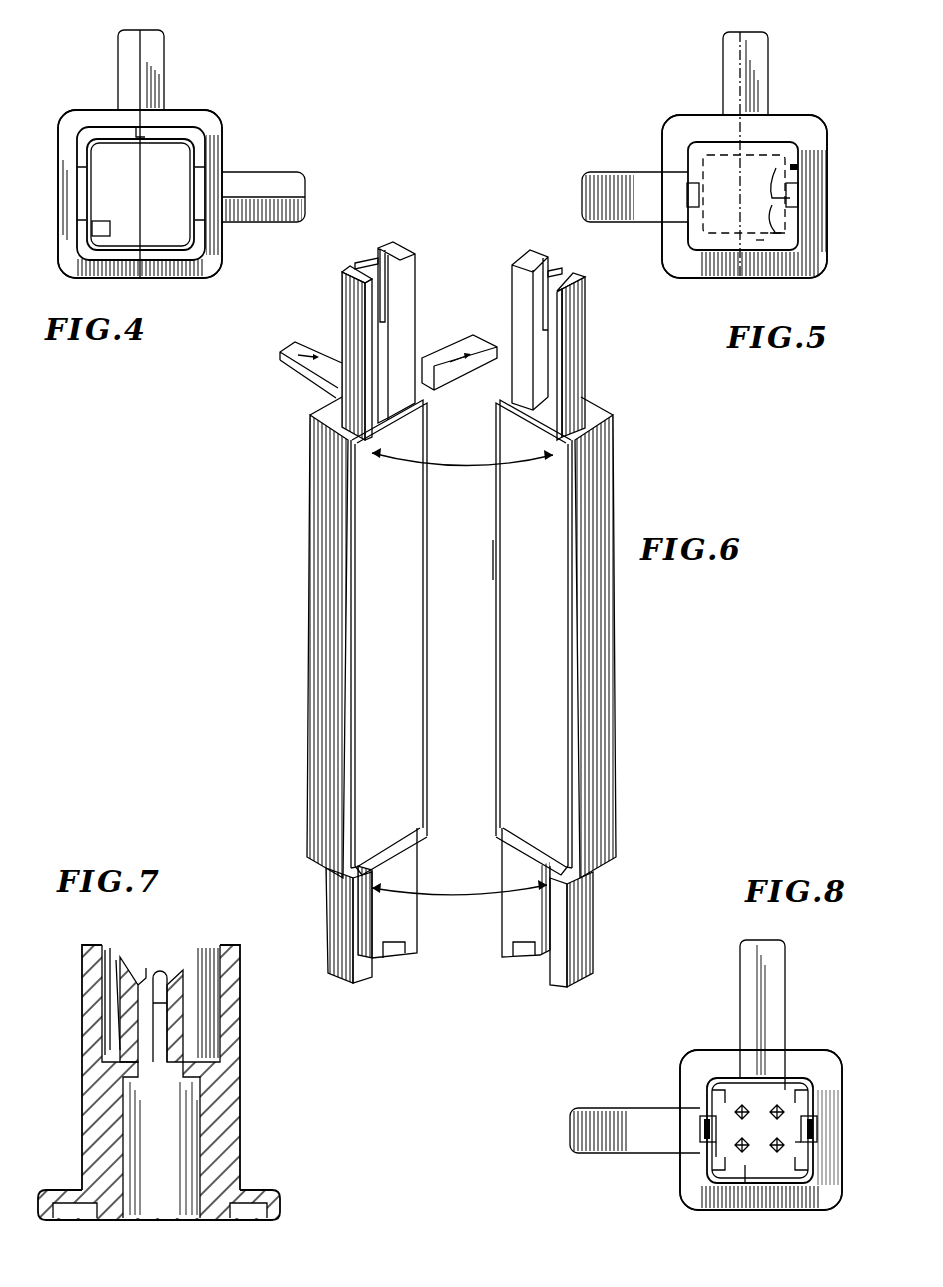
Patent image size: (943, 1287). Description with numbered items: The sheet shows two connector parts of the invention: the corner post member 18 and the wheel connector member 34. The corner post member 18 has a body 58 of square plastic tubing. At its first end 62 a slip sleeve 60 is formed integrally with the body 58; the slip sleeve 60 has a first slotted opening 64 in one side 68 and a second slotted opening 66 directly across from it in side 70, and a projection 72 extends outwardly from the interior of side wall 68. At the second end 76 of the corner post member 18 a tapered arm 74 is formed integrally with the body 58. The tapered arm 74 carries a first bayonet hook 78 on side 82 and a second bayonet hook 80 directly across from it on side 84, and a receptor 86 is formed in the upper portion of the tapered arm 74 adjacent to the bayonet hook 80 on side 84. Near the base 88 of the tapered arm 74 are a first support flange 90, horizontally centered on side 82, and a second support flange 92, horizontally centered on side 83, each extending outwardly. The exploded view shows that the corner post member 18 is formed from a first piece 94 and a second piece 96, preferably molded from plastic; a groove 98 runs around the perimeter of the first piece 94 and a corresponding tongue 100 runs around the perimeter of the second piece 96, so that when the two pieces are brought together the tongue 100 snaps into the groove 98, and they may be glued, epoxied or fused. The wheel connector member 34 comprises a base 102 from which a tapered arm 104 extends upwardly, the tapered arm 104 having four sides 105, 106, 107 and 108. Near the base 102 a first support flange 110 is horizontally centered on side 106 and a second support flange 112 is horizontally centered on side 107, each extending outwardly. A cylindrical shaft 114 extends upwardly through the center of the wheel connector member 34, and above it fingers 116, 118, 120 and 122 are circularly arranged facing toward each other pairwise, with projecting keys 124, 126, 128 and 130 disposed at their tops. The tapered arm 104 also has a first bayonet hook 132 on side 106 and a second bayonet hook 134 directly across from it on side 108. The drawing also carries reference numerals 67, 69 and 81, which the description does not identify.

In FIG. 4, the corner post member 18 is at (254, 48).
In FIG. 5, the corner post member 18 is at (669, 48).
In FIG. 7, the wheel connector member 34 is at (62, 929).
In FIG. 8, the wheel connector member 34 is at (863, 966).
In FIG. 4, the body 58 is at (68, 117).
In FIG. 5, the body 58 is at (700, 278).
In FIG. 4, the slip sleeve 60 is at (103, 133).
In FIG. 4, the first end 62 is at (212, 118).
In FIG. 4, the first slotted opening 64 is at (88, 192).
In FIG. 4, the second slotted opening 66 is at (204, 178).
In FIG. 4, the bottom wall 67 is at (163, 256).
In FIG. 4, the side 68 is at (75, 228).
In FIG. 4, the rib 69 is at (165, 133).
In FIG. 4, the side 70 is at (207, 232).
In FIG. 4, the projection 72 is at (100, 221).
In FIG. 5, the tapered arm 74 is at (801, 133).
In FIG. 5, the second end 76 is at (672, 246).
In FIG. 5, the first bayonet hook 78 is at (687, 194).
In FIG. 6, the first bayonet hook 78 is at (376, 262).
In FIG. 5, the second bayonet hook 80 is at (799, 196).
In FIG. 6, the second bayonet hook 80 is at (556, 271).
In FIG. 5, the slot 81 is at (762, 242).
In FIG. 5, the side 82 is at (690, 158).
In FIG. 5, the side 83 is at (748, 147).
In FIG. 5, the side 84 is at (803, 158).
In FIG. 5, the receptor 86 is at (786, 236).
In FIG. 5, the base 88 is at (688, 230).
In FIG. 4, the first support flange 90 is at (285, 180).
In FIG. 5, the first support flange 90 is at (600, 178).
In FIG. 6, the first support flange 90 is at (305, 345).
In FIG. 4, the second support flange 92 is at (159, 57).
In FIG. 5, the second support flange 92 is at (730, 87).
In FIG. 6, the second support flange 92 is at (448, 352).
In FIG. 6, the first piece 94 is at (309, 630).
In FIG. 6, the second piece 96 is at (615, 634).
In FIG. 6, the groove 98 is at (428, 449).
In FIG. 6, the tongue 100 is at (494, 564).
In FIG. 7, the base 102 is at (263, 1193).
In FIG. 8, the base 102 is at (697, 1202).
In FIG. 7, the tapered arm 104 is at (240, 1122).
In FIG. 8, the tapered arm 104 is at (733, 1073).
In FIG. 8, the side 105 is at (766, 1182).
In FIG. 8, the side 106 is at (713, 1097).
In FIG. 8, the side 107 is at (793, 1077).
In FIG. 8, the side 108 is at (797, 1102).
In FIG. 8, the first support flange 110 is at (572, 1128).
In FIG. 8, the second support flange 112 is at (775, 953).
In FIG. 7, the cylindrical shaft 114 is at (172, 1210).
In FIG. 8, the cylindrical shaft 114 is at (748, 1183).
In FIG. 7, the finger 116 is at (130, 1022).
In FIG. 8, the finger 116 is at (737, 1155).
In FIG. 7, the finger 118 is at (165, 1012).
In FIG. 8, the finger 118 is at (735, 1110).
In FIG. 7, the finger 120 is at (190, 1027).
In FIG. 8, the finger 120 is at (803, 1093).
In FIG. 8, the finger 122 is at (778, 1158).
In FIG. 7, the projecting key 124 is at (140, 975).
In FIG. 8, the projecting key 124 is at (733, 1150).
In FIG. 7, the projecting key 126 is at (146, 966).
In FIG. 8, the projecting key 126 is at (752, 1108).
In FIG. 7, the projecting key 128 is at (173, 980).
In FIG. 8, the projecting key 128 is at (767, 1108).
In FIG. 8, the projecting key 130 is at (780, 1148).
In FIG. 8, the first bayonet hook 132 is at (700, 1128).
In FIG. 8, the second bayonet hook 134 is at (818, 1132).